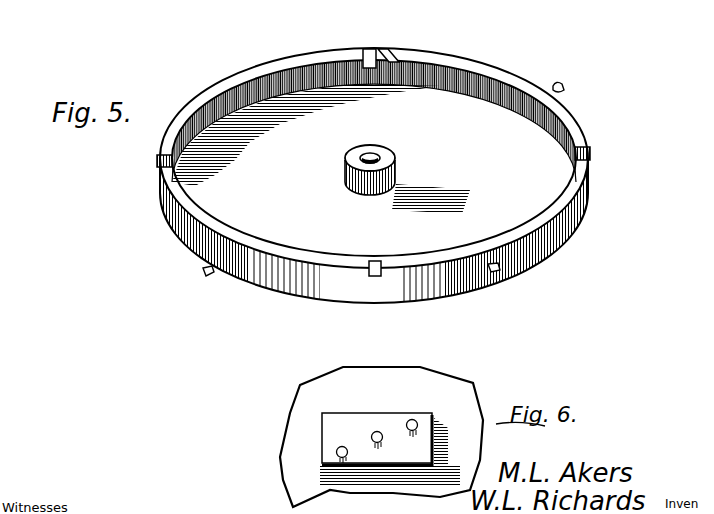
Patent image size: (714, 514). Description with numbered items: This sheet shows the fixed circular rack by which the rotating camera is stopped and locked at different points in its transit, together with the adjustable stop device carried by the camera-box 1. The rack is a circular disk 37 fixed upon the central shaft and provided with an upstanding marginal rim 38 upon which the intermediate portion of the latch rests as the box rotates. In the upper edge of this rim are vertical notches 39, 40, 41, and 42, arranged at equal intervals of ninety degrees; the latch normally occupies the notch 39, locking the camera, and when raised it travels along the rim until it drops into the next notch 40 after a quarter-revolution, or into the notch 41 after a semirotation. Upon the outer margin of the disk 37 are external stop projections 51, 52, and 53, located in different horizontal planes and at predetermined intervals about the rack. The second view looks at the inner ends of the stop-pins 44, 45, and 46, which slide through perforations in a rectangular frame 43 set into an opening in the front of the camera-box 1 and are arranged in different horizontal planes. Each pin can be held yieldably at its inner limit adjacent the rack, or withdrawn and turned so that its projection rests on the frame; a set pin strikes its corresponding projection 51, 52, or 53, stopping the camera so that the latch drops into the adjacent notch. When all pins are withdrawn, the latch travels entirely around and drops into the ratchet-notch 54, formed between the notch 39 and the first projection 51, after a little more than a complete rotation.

In FIG. 6, the camera-box 1 is at (287, 442).
In FIG. 5, the circular disk 37 is at (317, 147).
In FIG. 5, the upstanding marginal rim 38 is at (288, 60).
In FIG. 5, the notch 39 is at (369, 49).
In FIG. 5, the notch 40 is at (591, 152).
In FIG. 5, the notch 41 is at (376, 262).
In FIG. 5, the notch 42 is at (157, 162).
In FIG. 6, the rectangular frame 43 is at (365, 465).
In FIG. 6, the stop-pin 44 is at (416, 420).
In FIG. 6, the stop-pin 45 is at (379, 431).
In FIG. 6, the stop-pin 46 is at (343, 446).
In FIG. 5, the stop projection 51 is at (565, 90).
In FIG. 5, the stop projection 52 is at (495, 272).
In FIG. 5, the stop projection 53 is at (207, 276).
In FIG. 5, the ratchet-notch 54 is at (395, 49).